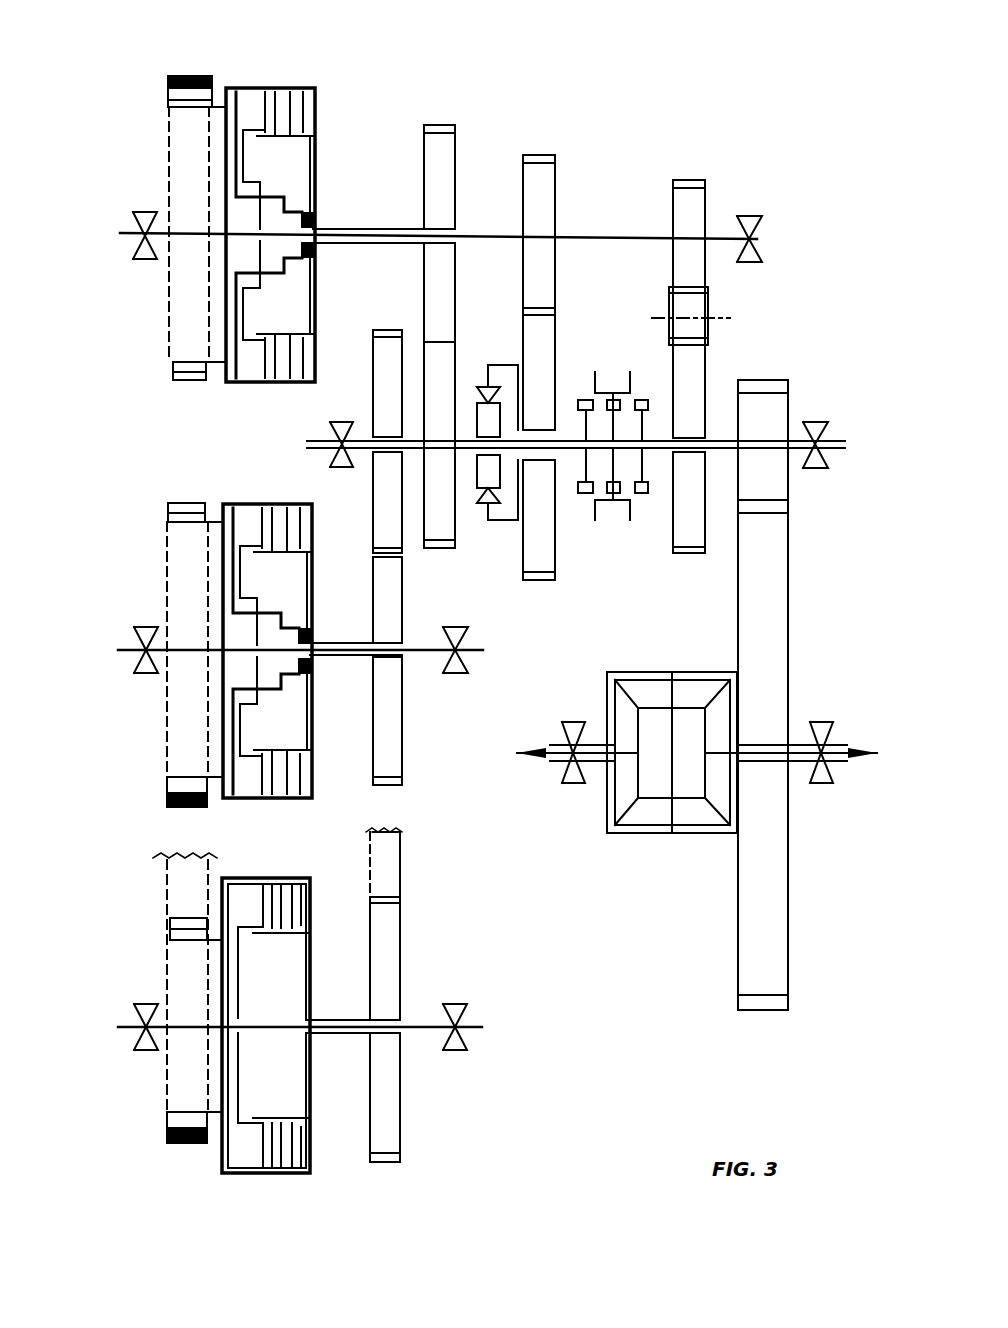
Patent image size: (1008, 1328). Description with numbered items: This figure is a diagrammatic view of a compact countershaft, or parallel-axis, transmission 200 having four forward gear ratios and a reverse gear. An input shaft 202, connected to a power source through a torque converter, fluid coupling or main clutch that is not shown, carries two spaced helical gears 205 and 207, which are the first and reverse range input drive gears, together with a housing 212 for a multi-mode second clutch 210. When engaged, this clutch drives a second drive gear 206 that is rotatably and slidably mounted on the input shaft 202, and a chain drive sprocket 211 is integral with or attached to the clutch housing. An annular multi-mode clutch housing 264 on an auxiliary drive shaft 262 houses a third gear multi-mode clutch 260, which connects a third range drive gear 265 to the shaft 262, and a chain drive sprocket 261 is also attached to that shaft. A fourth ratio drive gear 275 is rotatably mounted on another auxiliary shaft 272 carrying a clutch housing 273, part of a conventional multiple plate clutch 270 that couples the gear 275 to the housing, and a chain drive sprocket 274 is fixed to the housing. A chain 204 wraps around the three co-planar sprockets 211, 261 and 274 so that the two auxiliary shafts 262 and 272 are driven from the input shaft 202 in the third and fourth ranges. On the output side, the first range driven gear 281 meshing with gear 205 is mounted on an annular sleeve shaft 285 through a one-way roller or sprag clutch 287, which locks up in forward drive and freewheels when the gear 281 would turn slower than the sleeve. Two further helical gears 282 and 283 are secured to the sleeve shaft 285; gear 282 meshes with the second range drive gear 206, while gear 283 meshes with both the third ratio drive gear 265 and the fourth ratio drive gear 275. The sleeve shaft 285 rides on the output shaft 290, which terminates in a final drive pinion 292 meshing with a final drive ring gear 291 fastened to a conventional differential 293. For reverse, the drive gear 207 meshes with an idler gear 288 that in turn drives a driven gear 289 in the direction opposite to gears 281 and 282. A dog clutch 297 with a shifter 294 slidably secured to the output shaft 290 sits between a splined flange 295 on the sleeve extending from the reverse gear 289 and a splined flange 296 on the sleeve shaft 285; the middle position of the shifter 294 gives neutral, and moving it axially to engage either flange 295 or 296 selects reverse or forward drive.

The transmission 200 is at (706, 89).
The input shaft 202 is at (194, 231).
The chain 204 is at (197, 82).
The helical gear 205 is at (541, 176).
The second drive gear 206 is at (441, 146).
The reverse drive gear 207 is at (687, 198).
The multi-mode second clutch 210 is at (249, 66).
The chain drive sprocket 211 is at (185, 98).
The housing 212 is at (226, 155).
The third gear multi-mode clutch 260 is at (228, 488).
The chain drive sprocket 261 is at (183, 517).
The auxiliary drive shaft 262 is at (147, 641).
The annular multi-mode clutch housing 264 is at (223, 569).
The third range drive gear 265 is at (392, 723).
The multiple plate clutch 270 is at (246, 864).
The auxiliary shaft 272 is at (128, 1025).
The clutch housing 273 is at (222, 992).
The chain drive sprocket 274 is at (170, 937).
The fourth ratio drive gear 275 is at (388, 935).
The first range driven gear 281 is at (539, 331).
The helical toothed gear 282 is at (437, 360).
The helical toothed gear 283 is at (385, 398).
The annular sleeve shaft 285 is at (468, 432).
The one-way roller or sprag clutch 287 is at (482, 500).
The idler gear 288 is at (695, 305).
The driven gear 289 is at (690, 358).
The output shaft 290 is at (834, 442).
The final drive ring gear 291 is at (770, 532).
The final drive pinion 292 is at (770, 408).
The differential 293 is at (697, 670).
The shifter 294 is at (615, 515).
The splined flange 295 is at (645, 497).
The splined flange 296 is at (580, 400).
The dog clutch 297 is at (582, 538).